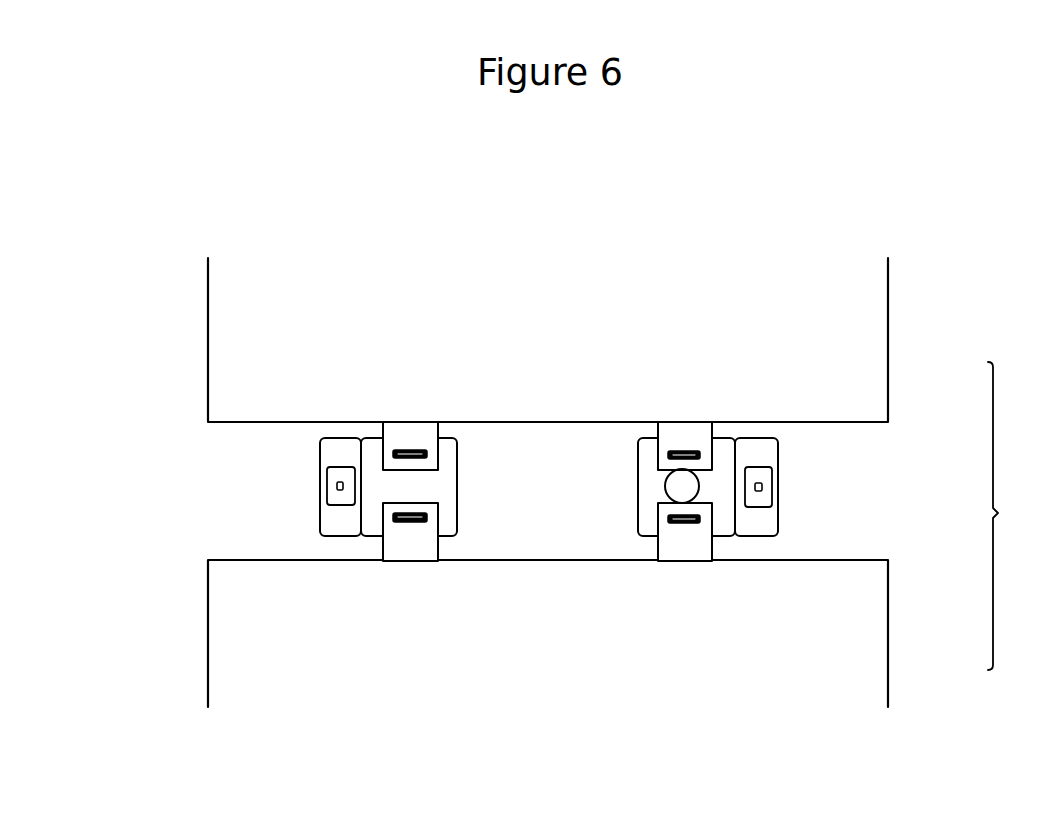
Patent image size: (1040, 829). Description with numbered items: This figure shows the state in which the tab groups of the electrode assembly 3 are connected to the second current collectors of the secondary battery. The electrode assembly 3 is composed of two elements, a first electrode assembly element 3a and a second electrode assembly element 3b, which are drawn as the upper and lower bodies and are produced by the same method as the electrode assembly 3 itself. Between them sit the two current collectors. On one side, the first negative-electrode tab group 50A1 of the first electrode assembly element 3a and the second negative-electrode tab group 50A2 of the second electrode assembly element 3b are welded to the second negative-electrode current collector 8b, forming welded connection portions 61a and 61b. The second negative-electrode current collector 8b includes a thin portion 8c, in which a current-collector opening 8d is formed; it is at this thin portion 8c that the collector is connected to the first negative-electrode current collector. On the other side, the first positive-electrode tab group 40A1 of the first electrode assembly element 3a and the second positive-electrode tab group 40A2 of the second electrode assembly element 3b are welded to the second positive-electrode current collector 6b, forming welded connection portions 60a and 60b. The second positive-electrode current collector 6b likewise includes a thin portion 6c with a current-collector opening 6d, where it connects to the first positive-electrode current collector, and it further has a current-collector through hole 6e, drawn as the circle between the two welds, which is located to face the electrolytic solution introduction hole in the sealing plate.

The electrode assembly 3 is at (1005, 516).
The first electrode assembly element 3a is at (842, 373).
The second electrode assembly element 3b is at (850, 647).
The first negative-electrode tab group 50A1 is at (407, 437).
The second negative-electrode tab group 50A2 is at (407, 543).
The first positive-electrode tab group 40A1 is at (682, 437).
The second positive-electrode tab group 40A2 is at (684, 543).
The welded connection portion 61a is at (425, 450).
The welded connection portion 61b is at (426, 516).
The welded connection portion 60a is at (670, 453).
The welded connection portion 60b is at (668, 520).
The current-collector through hole 6e is at (664, 487).
The second negative-electrode current collector 8b is at (342, 449).
The thin portion 8c is at (340, 503).
The current-collector opening 8d is at (340, 487).
The second positive-electrode current collector 6b is at (760, 451).
The thin portion 6c is at (760, 498).
The current-collector opening 6d is at (762, 487).